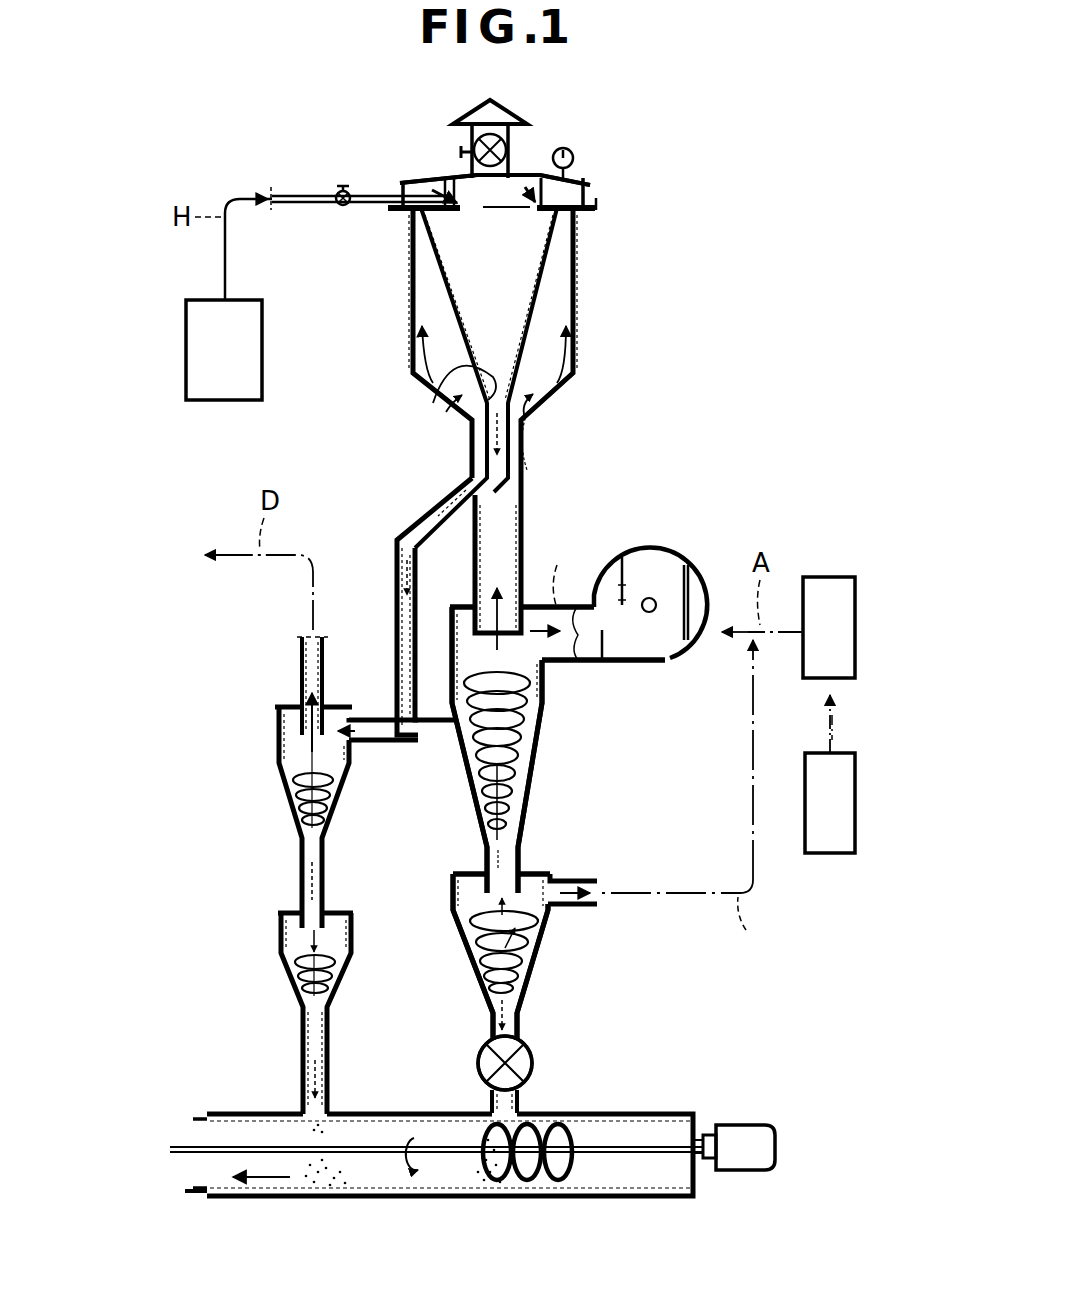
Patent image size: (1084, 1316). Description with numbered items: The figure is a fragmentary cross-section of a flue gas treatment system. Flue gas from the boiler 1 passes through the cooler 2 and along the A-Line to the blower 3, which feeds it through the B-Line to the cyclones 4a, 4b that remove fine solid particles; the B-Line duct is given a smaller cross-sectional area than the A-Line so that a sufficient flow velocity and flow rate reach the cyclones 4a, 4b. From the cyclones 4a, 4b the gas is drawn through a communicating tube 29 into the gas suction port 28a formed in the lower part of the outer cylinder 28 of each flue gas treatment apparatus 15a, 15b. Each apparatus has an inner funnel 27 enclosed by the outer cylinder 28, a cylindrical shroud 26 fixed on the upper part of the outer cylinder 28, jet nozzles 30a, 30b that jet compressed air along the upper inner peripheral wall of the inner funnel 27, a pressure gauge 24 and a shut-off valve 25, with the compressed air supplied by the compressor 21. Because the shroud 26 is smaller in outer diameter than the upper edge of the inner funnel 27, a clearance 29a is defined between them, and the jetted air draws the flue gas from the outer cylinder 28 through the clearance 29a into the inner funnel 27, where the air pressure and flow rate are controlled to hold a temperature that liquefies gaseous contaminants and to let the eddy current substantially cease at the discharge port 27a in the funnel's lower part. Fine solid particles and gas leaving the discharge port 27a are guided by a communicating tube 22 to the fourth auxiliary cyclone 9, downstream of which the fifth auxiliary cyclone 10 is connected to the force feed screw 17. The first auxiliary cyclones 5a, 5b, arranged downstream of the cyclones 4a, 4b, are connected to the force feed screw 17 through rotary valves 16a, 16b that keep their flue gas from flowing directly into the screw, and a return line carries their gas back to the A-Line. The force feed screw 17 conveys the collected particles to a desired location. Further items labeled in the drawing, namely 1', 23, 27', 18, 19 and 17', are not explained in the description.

The boiler 1 is at (830, 774).
The raw material 1' is at (863, 721).
The cooler 2 is at (838, 640).
The blower 3 is at (675, 566).
The cyclone 4a is at (549, 718).
The cyclone 4b is at (557, 750).
The first auxiliary cyclone 5a is at (538, 915).
The first auxiliary cyclone 5b is at (501, 957).
The fourth auxiliary cyclone 9 is at (278, 752).
The fifth auxiliary cyclone 10 is at (280, 936).
The flue gas treatment apparatus 15a is at (734, 287).
The flue gas treatment apparatus 15b is at (495, 337).
The rotary valve 16a is at (528, 1060).
The rotary valve 16b is at (505, 1063).
The force feed screw 17 is at (463, 1120).
The conveyor outlet 17' is at (206, 1178).
The screw 18 is at (492, 1128).
The motor 19 is at (752, 1125).
The compressor 21 is at (240, 364).
The communicating tube 22 is at (428, 512).
The valve 23 is at (345, 207).
The pressure gauge 24 is at (577, 157).
The shut-off valve 25 is at (517, 143).
The cylindrical shroud 26 is at (592, 186).
The inner funnel 27 is at (540, 378).
The inner cone wall 27' is at (566, 350).
The discharge port 27a is at (438, 400).
The outer cylinder 28 is at (576, 348).
The gas suction port 28a is at (530, 420).
The communicating tube 29 is at (527, 522).
The clearance 29a is at (598, 201).
The jet nozzle 30a is at (529, 188).
The jet nozzle 30b is at (450, 185).